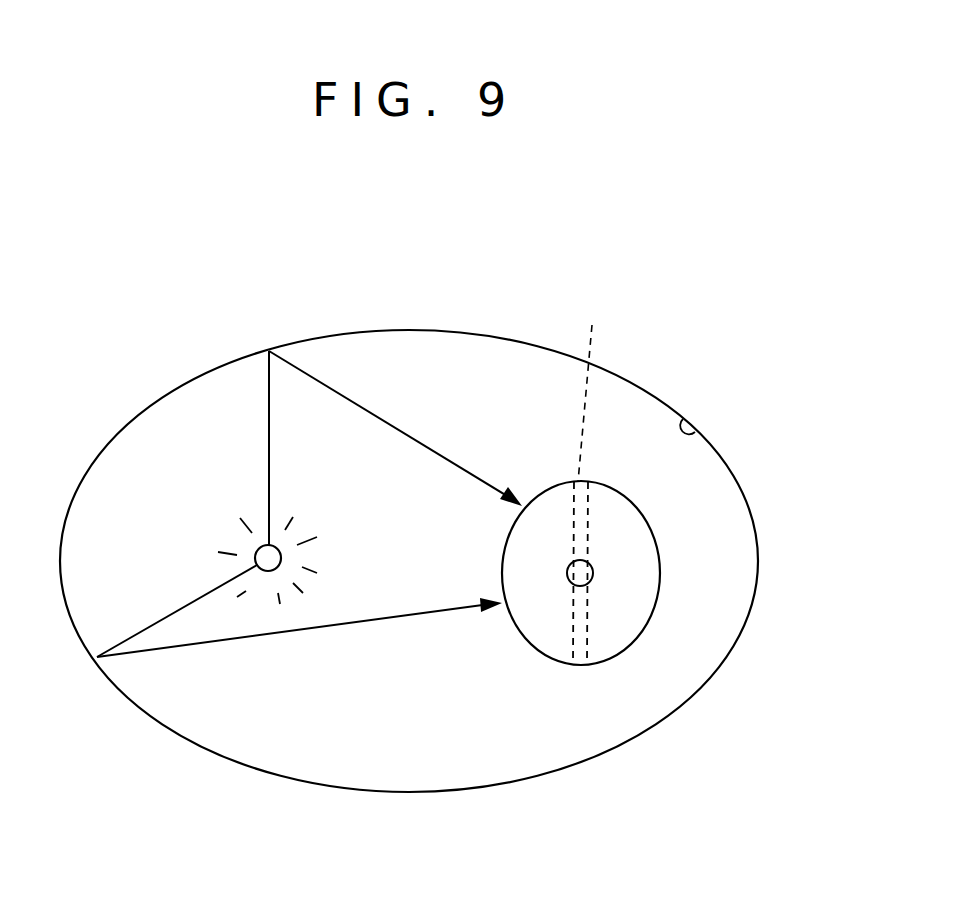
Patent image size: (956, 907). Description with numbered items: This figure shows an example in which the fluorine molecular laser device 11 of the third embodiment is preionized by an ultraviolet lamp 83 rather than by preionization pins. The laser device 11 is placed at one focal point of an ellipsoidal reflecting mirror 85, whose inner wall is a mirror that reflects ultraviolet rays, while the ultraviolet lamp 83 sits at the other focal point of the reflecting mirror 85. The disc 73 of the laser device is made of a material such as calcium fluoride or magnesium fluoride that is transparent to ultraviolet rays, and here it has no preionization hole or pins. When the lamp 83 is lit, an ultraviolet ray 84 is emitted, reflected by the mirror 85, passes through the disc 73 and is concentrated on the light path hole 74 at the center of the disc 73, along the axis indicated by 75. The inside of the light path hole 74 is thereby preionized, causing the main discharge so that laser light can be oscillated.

The fluorine molecular laser device 11 is at (622, 476).
The disc 73 is at (635, 512).
The light path hole 74 is at (593, 576).
The mirror axis 75 is at (592, 475).
The ultraviolet lamp 83 is at (266, 571).
The ultraviolet ray 84 is at (407, 432).
The ellipsoidal reflecting mirror 85 is at (690, 437).